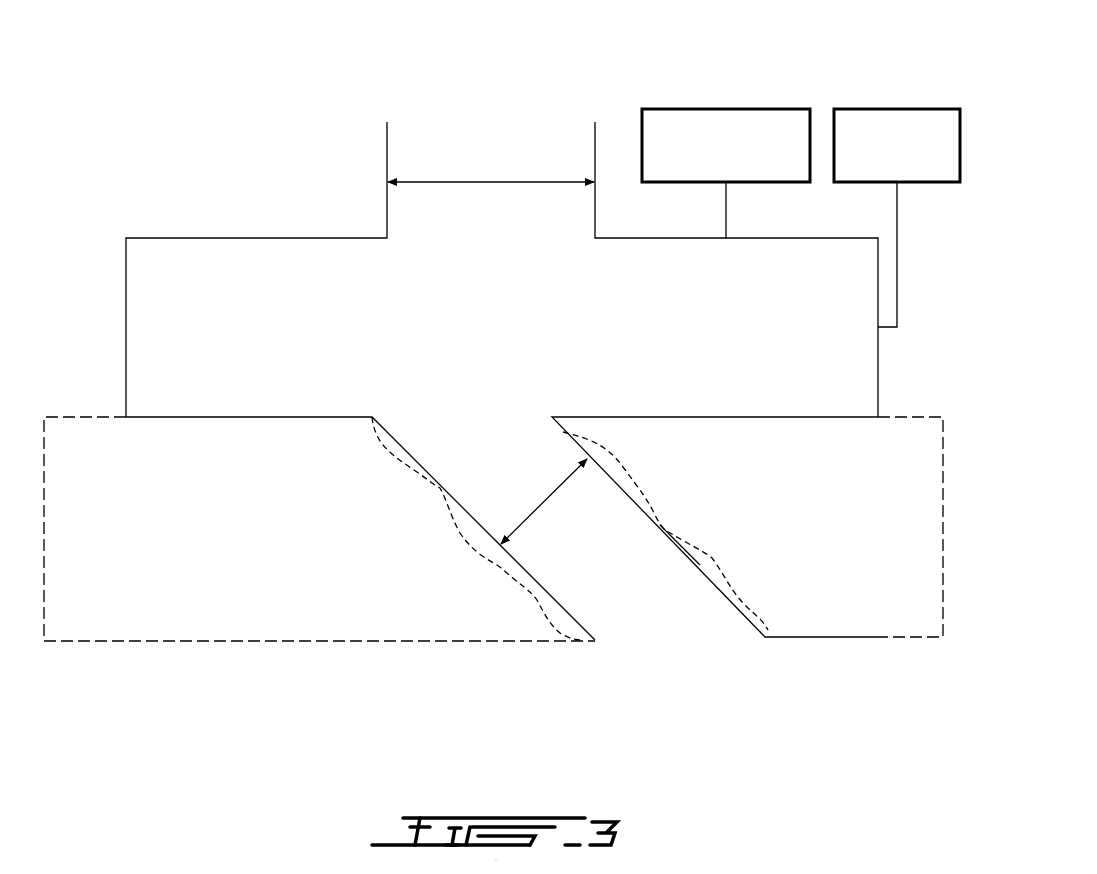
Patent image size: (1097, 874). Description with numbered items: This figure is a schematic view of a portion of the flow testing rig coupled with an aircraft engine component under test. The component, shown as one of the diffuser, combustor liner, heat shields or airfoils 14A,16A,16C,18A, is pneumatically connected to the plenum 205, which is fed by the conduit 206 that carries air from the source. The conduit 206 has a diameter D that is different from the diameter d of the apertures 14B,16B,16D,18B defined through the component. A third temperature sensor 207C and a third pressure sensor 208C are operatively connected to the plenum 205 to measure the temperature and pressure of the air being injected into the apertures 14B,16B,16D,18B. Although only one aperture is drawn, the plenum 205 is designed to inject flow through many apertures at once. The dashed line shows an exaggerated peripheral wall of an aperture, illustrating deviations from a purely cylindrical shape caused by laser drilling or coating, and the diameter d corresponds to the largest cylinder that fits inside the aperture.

The plenum 205 is at (238, 238).
The conduit 206 is at (387, 148).
The third temperature sensor 207C is at (727, 108).
The third pressure sensor 208C is at (897, 108).
The diameter of the conduit D is at (493, 182).
The diameter of the apertures d is at (545, 500).
The diffuser, combustor liner, heat shields, airfoils 14A,16A,16C,18A is at (132, 545).
The apertures 14B,16B,16D,18B is at (710, 555).